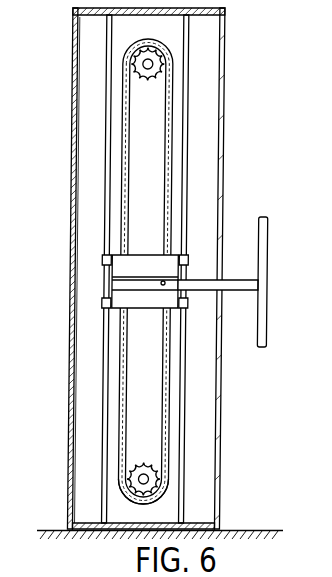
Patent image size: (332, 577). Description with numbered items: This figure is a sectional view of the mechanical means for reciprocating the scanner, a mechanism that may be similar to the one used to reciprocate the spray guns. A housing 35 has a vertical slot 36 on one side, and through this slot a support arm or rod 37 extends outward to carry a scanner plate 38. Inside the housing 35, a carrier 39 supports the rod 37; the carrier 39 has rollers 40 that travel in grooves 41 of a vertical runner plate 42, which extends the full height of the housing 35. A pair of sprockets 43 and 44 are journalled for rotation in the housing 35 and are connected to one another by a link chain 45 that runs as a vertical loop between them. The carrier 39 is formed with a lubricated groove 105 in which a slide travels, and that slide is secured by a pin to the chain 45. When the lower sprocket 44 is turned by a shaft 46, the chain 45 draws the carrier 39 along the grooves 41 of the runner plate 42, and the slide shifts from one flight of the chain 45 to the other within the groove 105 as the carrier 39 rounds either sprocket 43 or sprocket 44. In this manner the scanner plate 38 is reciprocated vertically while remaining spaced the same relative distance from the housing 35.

The housing 35 is at (73, 77).
The vertical slot 36 is at (224, 164).
The vertical runner plate 42 is at (214, 50).
The grooves 41 is at (108, 133).
The sprocket 43 is at (160, 80).
The sprocket 44 is at (168, 495).
The link chain 45 is at (172, 432).
The shaft 46 is at (154, 479).
The rollers 40 is at (108, 259).
The carrier 39 is at (161, 309).
The lubricated groove 105 is at (123, 280).
The support arm or rod 37 is at (248, 287).
The scanner plate 38 is at (271, 262).